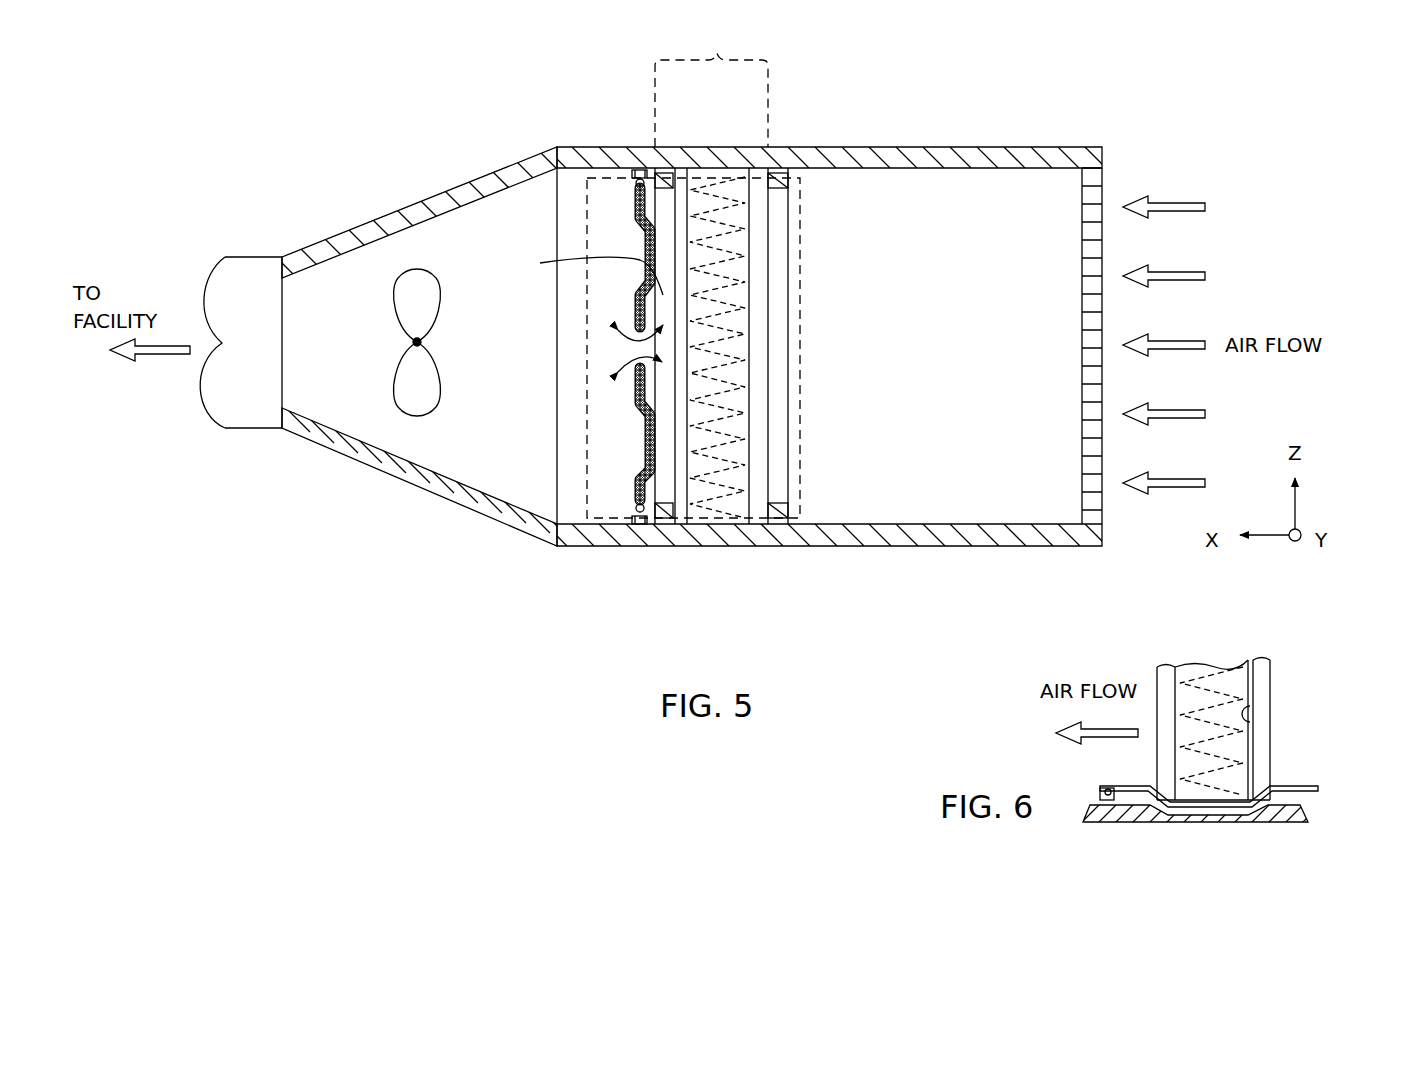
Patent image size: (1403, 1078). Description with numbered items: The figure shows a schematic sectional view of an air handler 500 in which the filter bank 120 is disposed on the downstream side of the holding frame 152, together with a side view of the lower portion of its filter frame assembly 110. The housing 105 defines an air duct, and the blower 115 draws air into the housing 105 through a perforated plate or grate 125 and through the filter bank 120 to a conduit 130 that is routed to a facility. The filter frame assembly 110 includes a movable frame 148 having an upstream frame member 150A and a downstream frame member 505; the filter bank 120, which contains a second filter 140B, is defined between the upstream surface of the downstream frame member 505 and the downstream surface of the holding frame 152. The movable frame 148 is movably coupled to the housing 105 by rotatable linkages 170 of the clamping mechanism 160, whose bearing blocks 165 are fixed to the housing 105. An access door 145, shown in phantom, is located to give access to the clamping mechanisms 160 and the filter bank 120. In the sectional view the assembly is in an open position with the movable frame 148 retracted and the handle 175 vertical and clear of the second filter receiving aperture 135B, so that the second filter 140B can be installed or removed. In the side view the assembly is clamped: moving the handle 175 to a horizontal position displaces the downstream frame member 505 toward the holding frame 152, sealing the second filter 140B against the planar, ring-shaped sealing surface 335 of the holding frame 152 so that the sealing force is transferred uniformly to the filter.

In FIG. 5, the air handler 500 is at (1092, 66).
In FIG. 5, the housing 105 is at (715, 556).
In FIG. 6, the housing 105 is at (1170, 832).
In FIG. 5, the filter frame assembly 110 is at (668, 560).
In FIG. 5, the blower 115 is at (415, 272).
In FIG. 5, the filter bank 120 is at (717, 50).
In FIG. 5, the perforated plate or grate 125 is at (1098, 183).
In FIG. 5, the conduit 130 is at (252, 257).
In FIG. 5, the second filter receiving aperture 135B is at (758, 210).
In FIG. 5, the second filter 140B is at (737, 512).
In FIG. 6, the second filter 140B is at (1250, 686).
In FIG. 5, the access door 145 is at (800, 500).
In FIG. 5, the movable frame 148 is at (650, 343).
In FIG. 6, the movable frame 148 is at (1158, 660).
In FIG. 5, the upstream frame member 150A is at (575, 274).
In FIG. 5, the holding frame 152 is at (780, 455).
In FIG. 6, the holding frame 152 is at (1265, 744).
In FIG. 5, the clamping mechanism 160 is at (630, 189).
In FIG. 5, the bearing block 165 is at (640, 540).
In FIG. 5, the rotatable linkage 170 is at (652, 540).
In FIG. 6, the rotatable linkage 170 is at (1098, 790).
In FIG. 5, the handle 175 is at (652, 186).
In FIG. 6, the handle 175 is at (1305, 792).
In FIG. 5, the downstream frame member 505 is at (658, 540).
In FIG. 6, the downstream frame member 505 is at (1163, 675).
In FIG. 6, the sealing surface 335 is at (1253, 718).